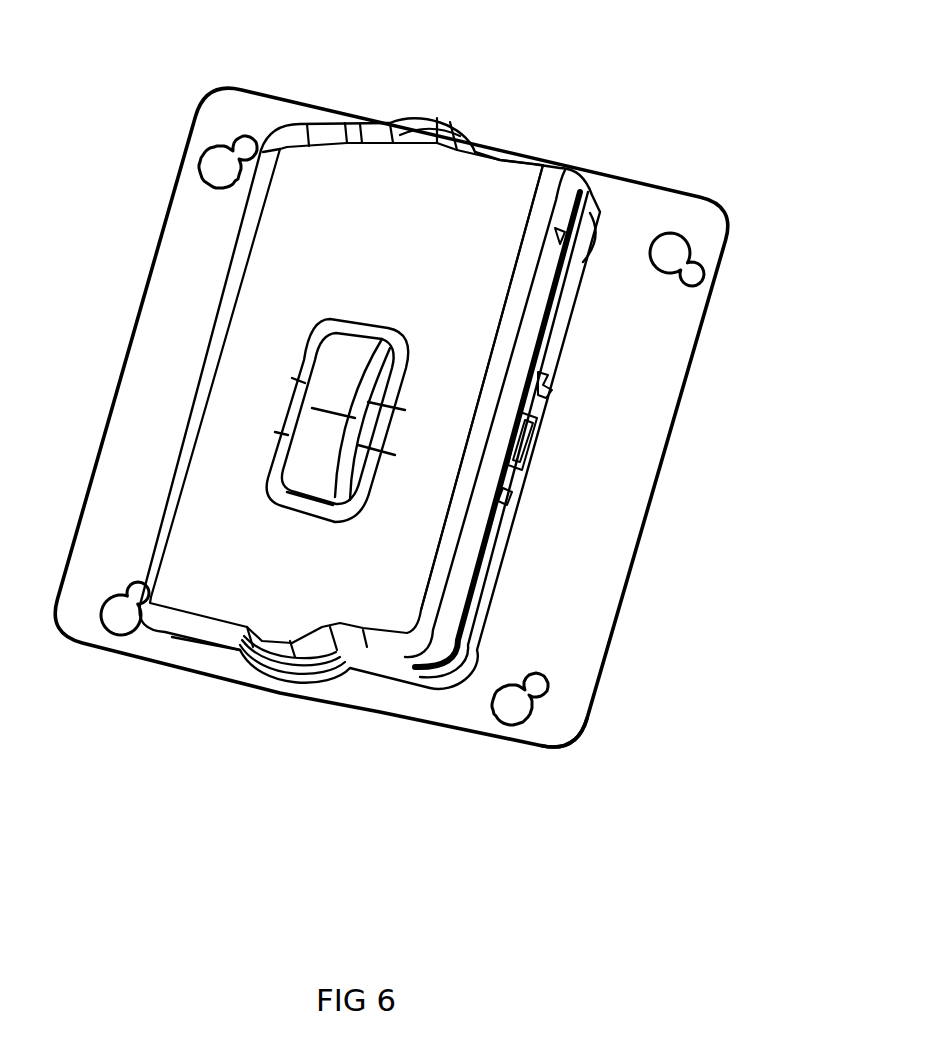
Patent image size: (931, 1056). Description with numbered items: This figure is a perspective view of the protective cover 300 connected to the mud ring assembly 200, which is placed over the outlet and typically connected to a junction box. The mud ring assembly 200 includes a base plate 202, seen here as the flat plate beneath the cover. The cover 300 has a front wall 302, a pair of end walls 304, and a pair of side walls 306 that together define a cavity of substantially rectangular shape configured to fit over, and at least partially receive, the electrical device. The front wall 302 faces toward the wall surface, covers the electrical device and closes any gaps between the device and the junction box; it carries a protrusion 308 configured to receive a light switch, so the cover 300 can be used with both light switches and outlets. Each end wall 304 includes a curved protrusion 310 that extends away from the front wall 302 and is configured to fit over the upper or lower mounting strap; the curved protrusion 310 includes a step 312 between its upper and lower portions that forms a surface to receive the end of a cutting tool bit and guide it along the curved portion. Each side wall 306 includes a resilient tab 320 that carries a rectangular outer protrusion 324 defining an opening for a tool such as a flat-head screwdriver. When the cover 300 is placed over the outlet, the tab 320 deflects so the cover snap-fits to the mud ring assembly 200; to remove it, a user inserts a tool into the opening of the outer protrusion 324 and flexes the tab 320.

The mud ring assembly 200 is at (617, 659).
The base plate 202 is at (583, 730).
The protective cover 300 is at (508, 146).
The front wall 302 is at (477, 180).
The end wall 304 is at (318, 135).
The side wall 306 is at (540, 315).
The protrusion 308 is at (343, 343).
The curved protrusion 310 is at (243, 680).
The step 312 is at (282, 693).
The resilient tab 320 is at (552, 393).
The rectangular outer protrusion 324 is at (542, 440).